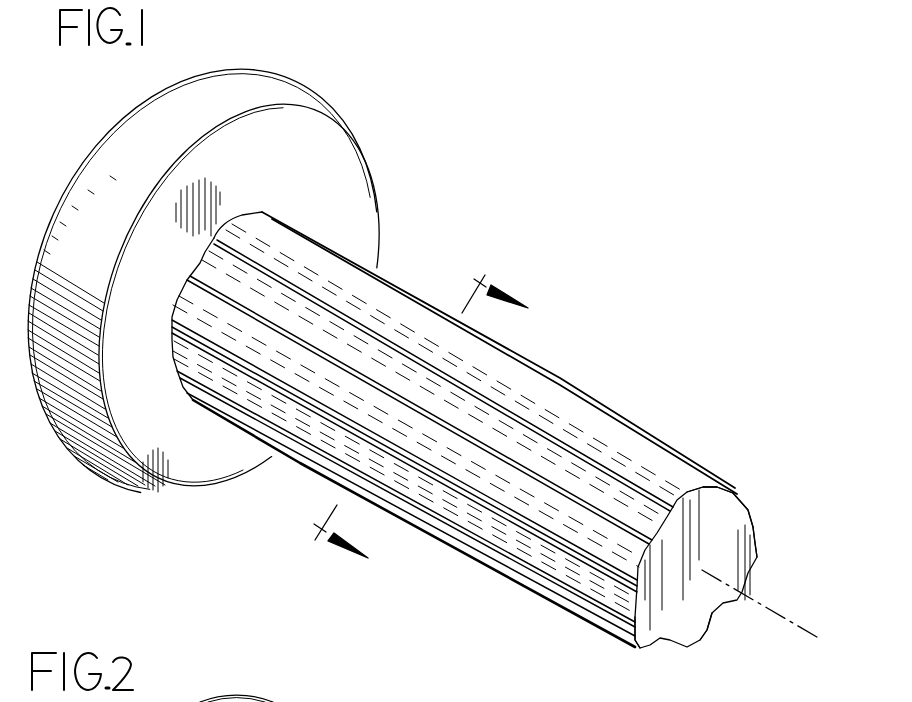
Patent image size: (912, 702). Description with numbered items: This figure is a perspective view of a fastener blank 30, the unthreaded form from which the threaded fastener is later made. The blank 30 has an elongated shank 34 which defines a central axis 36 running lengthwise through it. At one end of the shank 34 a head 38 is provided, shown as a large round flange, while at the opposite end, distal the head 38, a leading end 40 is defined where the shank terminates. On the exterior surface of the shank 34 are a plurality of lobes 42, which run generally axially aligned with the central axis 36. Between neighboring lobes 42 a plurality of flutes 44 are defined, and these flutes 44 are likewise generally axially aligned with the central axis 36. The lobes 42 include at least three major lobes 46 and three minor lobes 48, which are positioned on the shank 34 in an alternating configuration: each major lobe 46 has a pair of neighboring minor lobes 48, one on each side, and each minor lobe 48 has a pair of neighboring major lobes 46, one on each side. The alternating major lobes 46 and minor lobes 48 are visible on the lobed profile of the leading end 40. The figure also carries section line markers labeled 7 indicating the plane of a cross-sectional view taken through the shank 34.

The fastener blank 30 is at (472, 188).
The shank 34 is at (454, 429).
The central axis 36 is at (810, 633).
The head 38 is at (139, 511).
The leading end 40 is at (699, 550).
The lobes 42 is at (563, 412).
The flutes 44 is at (497, 433).
The major lobes 46 is at (695, 487).
The minor lobes 48 is at (752, 507).
The section line 7- 7 is at (411, 406).